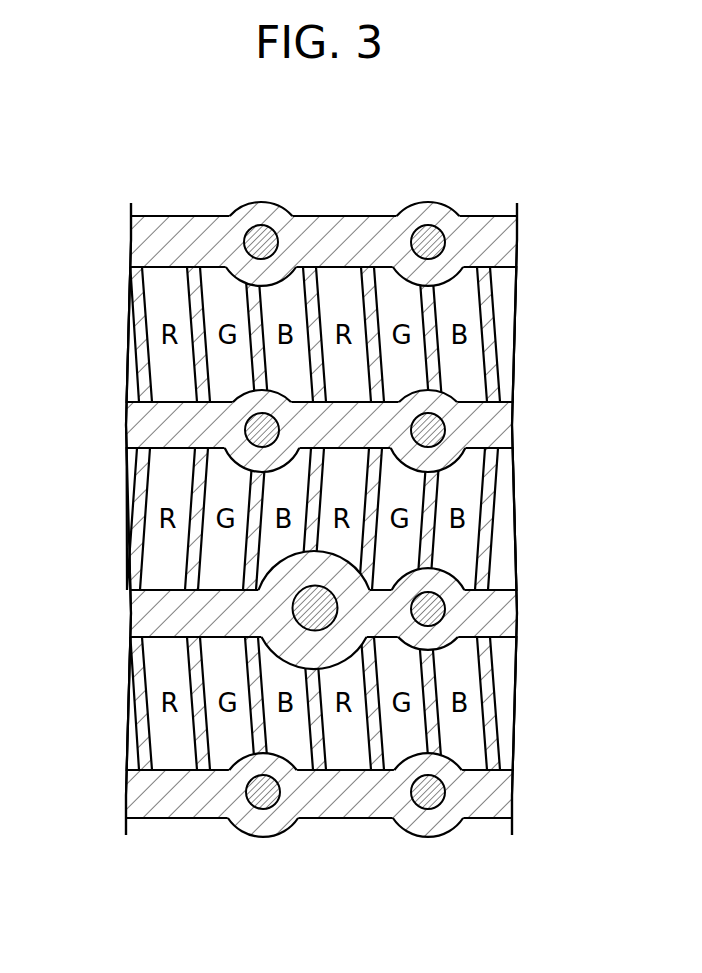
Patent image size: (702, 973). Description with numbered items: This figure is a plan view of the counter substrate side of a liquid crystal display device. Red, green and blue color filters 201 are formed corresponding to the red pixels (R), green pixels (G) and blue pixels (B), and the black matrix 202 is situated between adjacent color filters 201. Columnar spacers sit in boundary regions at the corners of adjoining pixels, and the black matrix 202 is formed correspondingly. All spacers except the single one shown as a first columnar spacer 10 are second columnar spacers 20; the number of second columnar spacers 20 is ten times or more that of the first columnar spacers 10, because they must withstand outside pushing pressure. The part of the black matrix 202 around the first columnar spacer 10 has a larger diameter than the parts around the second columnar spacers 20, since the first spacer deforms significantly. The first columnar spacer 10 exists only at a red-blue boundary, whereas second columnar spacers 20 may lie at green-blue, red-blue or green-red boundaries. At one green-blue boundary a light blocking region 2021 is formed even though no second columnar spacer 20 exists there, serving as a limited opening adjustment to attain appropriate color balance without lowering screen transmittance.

The first columnar spacer 10 is at (316, 607).
The second columnar spacer 20 is at (436, 416).
The color filter 201 is at (463, 292).
The black matrix 202 is at (487, 235).
The light blocking region 2021 is at (240, 590).